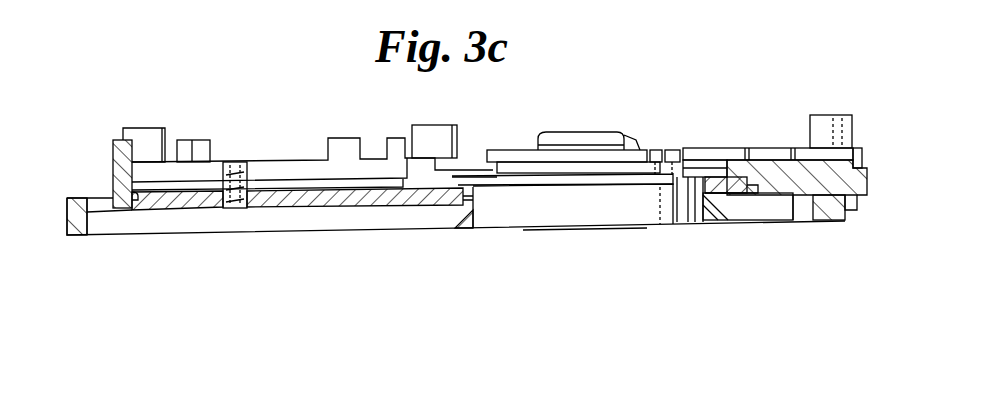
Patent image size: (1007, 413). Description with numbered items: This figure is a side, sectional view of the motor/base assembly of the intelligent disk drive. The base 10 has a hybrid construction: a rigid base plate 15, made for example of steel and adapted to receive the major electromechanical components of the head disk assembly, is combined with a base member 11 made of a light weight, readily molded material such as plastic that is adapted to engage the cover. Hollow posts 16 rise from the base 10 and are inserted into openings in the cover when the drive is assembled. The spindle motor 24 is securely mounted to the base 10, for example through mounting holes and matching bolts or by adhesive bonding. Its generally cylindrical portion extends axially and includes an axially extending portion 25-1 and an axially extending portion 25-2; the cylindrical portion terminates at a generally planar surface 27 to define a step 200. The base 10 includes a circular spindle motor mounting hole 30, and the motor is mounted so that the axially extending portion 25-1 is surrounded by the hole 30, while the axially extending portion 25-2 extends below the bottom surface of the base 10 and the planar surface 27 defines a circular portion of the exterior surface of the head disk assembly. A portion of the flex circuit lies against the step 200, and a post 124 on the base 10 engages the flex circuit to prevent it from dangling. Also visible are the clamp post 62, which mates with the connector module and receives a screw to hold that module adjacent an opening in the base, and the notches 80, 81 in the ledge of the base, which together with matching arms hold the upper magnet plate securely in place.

The base 10 is at (74, 180).
The base member 11 is at (108, 206).
The rigid base plate 15 is at (300, 207).
The posts 16 is at (137, 127).
The spindle motor 24 is at (597, 132).
The axially extending portion 25-1 is at (714, 205).
The axially extending portion 25-2 is at (467, 212).
The generally planar surface 27 is at (658, 232).
The spindle motor mounting hole 30 is at (478, 204).
The clamp post 62 is at (252, 163).
The notch 80 is at (373, 158).
The notch 81 is at (172, 150).
The post 124 is at (788, 212).
The step 200 is at (692, 224).